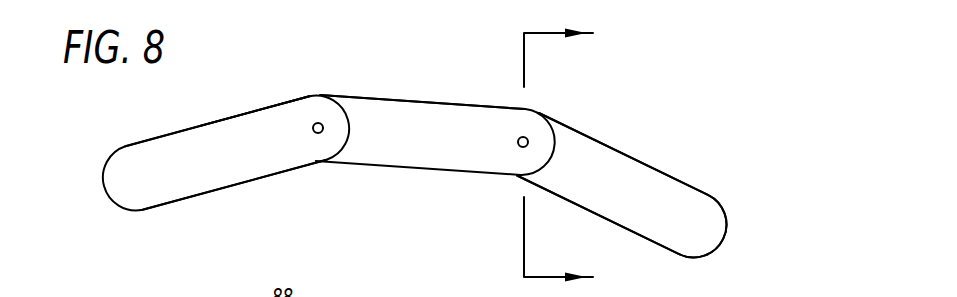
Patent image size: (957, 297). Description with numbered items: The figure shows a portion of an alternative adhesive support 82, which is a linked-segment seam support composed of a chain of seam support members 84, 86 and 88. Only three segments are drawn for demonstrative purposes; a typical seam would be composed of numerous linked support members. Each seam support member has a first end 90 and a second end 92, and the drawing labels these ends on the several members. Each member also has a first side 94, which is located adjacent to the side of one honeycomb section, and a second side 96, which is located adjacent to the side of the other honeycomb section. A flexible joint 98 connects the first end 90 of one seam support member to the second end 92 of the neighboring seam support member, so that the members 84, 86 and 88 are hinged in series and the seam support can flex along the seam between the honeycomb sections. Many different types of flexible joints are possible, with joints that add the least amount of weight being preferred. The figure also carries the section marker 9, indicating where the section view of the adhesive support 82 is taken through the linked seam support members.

The section line 9- 9 is at (572, 158).
The adhesive support 82 is at (415, 143).
The seam support member 84 is at (207, 125).
The seam support member 86 is at (410, 166).
The seam support member 88 is at (663, 173).
The first end 90 is at (140, 182).
The second end 92 is at (327, 148).
The first side 94 is at (257, 150).
The second side 96 is at (700, 192).
The flexible joint 98 is at (315, 127).